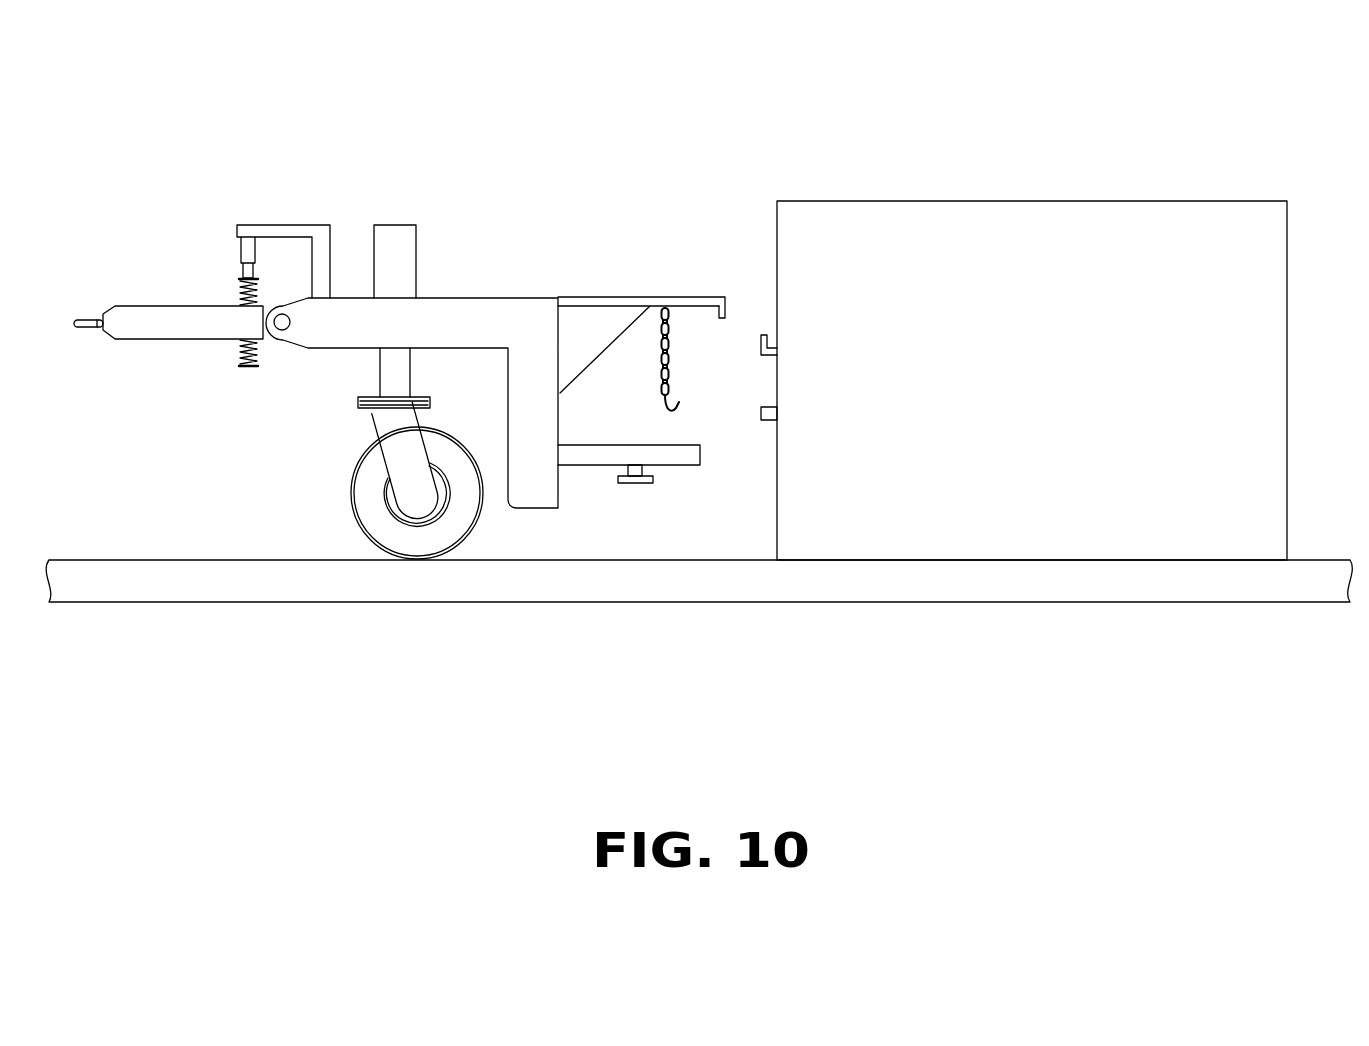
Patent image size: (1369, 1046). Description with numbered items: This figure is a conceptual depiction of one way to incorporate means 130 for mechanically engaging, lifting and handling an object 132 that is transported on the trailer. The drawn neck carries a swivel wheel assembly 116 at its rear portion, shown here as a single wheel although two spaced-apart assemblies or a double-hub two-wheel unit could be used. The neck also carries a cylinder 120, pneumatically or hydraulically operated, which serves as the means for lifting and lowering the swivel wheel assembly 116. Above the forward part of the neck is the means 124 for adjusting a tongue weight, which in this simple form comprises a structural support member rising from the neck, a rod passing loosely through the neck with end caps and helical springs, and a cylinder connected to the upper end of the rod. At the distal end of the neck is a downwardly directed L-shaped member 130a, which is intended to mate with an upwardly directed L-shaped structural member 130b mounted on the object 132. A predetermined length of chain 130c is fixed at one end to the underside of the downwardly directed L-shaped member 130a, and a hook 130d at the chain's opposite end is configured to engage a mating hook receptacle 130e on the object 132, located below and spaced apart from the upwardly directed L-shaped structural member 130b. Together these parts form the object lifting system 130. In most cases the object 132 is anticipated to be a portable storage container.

The swivel wheel assembly 116 is at (365, 494).
The cylinder 120 is at (397, 378).
The means for adjusting a tongue weight 124 is at (292, 186).
The means for mechanically engaging, lifting and handling an object 130 is at (693, 383).
The downwardly directed L-shaped member 130a is at (720, 297).
The upwardly directed L-shaped structural member 130b is at (770, 352).
The chain 130c is at (660, 353).
The hook 130d is at (675, 402).
The hook receptacle 130e is at (770, 413).
The object 132 is at (1045, 407).